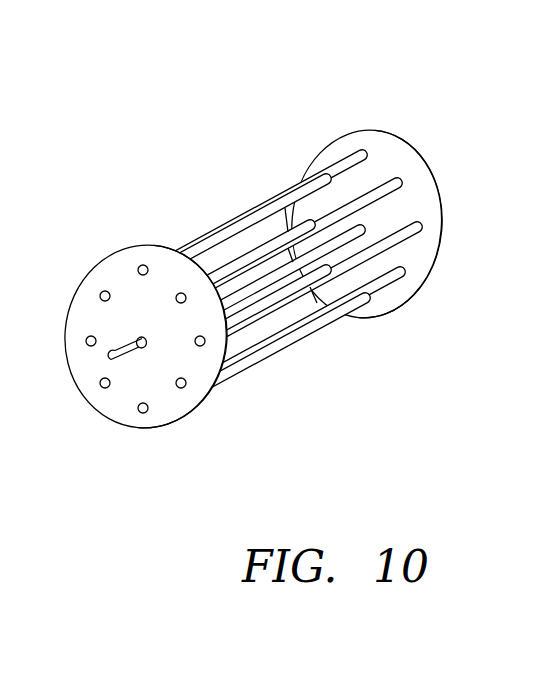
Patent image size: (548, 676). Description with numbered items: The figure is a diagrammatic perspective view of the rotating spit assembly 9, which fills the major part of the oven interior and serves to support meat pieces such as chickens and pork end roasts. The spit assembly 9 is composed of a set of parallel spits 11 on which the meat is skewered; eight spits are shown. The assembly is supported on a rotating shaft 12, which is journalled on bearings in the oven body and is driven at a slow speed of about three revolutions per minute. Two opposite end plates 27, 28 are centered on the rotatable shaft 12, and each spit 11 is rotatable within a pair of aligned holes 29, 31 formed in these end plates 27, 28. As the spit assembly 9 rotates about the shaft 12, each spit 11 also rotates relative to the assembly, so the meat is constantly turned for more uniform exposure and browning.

The spit assembly 9 is at (175, 195).
The spits 11 is at (278, 195).
The rotating shaft 12 is at (128, 350).
The end plate 27 is at (441, 230).
The end plate 28 is at (87, 363).
The hole 29 is at (398, 185).
The hole 31 is at (203, 347).